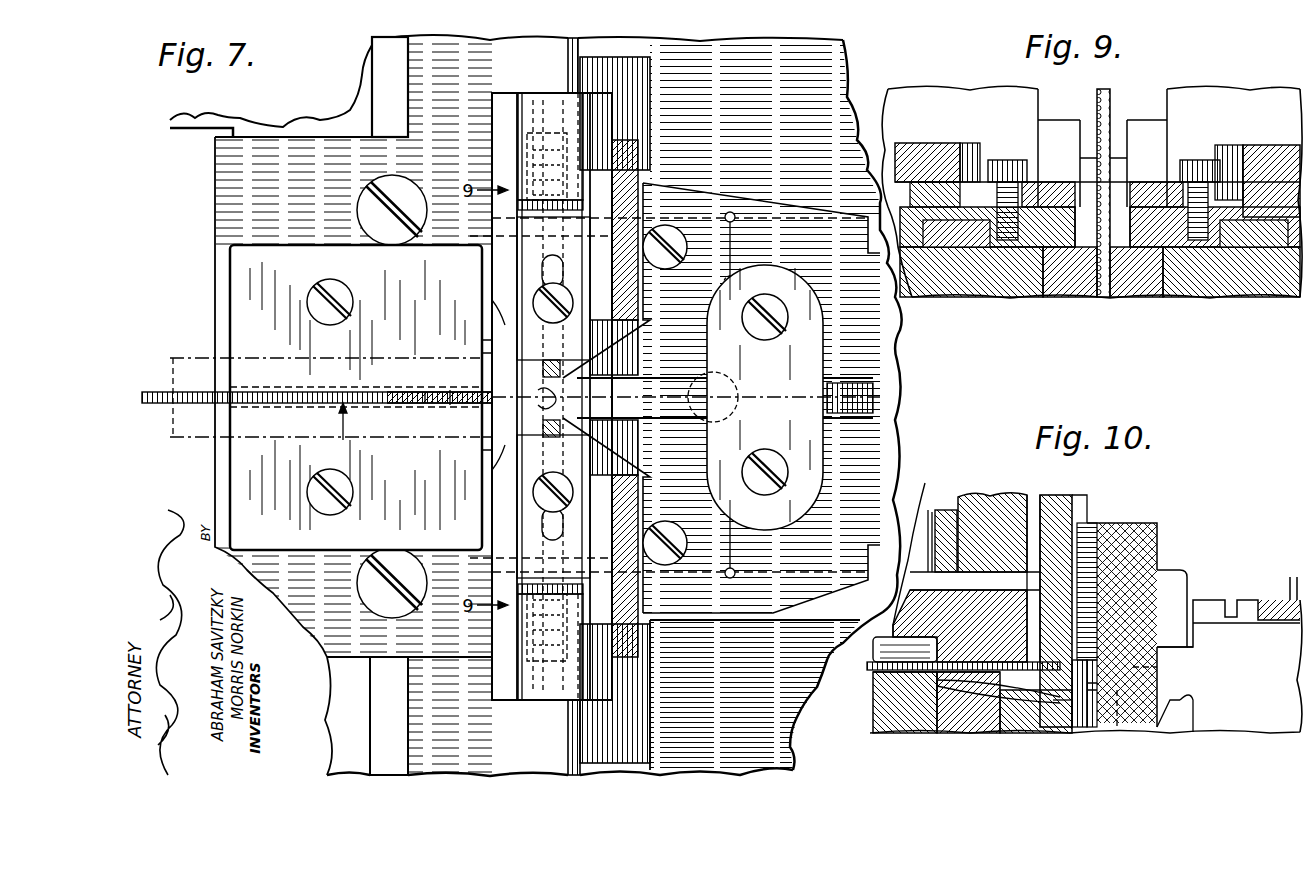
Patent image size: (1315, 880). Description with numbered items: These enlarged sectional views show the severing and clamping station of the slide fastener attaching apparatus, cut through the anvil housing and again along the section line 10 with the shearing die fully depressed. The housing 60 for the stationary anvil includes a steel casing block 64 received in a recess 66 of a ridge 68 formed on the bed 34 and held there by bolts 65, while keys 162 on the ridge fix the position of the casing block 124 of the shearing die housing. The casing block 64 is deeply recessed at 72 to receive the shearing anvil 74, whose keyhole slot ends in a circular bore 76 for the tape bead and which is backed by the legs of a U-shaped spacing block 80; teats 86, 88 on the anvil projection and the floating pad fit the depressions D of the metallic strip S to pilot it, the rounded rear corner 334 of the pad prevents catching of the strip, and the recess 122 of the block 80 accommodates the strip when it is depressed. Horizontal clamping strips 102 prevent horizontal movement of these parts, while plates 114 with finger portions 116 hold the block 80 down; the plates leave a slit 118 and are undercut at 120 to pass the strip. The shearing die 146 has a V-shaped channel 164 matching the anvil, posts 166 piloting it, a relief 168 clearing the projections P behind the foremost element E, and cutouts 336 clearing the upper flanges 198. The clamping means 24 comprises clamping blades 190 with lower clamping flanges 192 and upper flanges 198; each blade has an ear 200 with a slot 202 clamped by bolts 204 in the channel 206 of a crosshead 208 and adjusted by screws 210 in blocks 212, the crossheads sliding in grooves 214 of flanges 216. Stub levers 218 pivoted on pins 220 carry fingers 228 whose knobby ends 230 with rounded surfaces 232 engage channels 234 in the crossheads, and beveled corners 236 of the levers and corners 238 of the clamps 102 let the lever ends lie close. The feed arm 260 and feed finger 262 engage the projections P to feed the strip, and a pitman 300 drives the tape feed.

In FIG. 7, the bed 34 is at (830, 60).
In FIG. 7, the anvil housing 60 is at (207, 212).
In FIG. 7, the casing block 64 is at (463, 640).
In FIG. 9, the casing block 64 is at (1207, 277).
In FIG. 10, the casing block 64 is at (875, 733).
In FIG. 7, the bolts 65 is at (362, 208).
In FIG. 7, the recess 66 is at (455, 143).
In FIG. 7, the ridge 68 is at (545, 767).
In FIG. 9, the forward recess 72 is at (1147, 280).
In FIG. 10, the forward recess 72 is at (897, 733).
In FIG. 7, the shearing anvil 74 is at (567, 390).
In FIG. 9, the shearing anvil 74 is at (1113, 300).
In FIG. 10, the shearing anvil 74 is at (1073, 733).
In FIG. 10, the bore 76 is at (1098, 733).
In FIG. 7, the U-shaped spacing block 80 is at (500, 327).
In FIG. 10, the U-shaped spacing block 80 is at (945, 718).
In FIG. 10, the teat 86 is at (1087, 683).
In FIG. 10, the teat 88 is at (1053, 733).
In FIG. 7, the clamping strips 102 is at (625, 748).
In FIG. 10, the clamping strips 102 is at (1115, 710).
In FIG. 7, the clamping plates 114 is at (297, 540).
In FIG. 7, the finger portions 116 is at (483, 363).
In FIG. 7, the slit 118 is at (258, 392).
In FIG. 7, the undercut 120 is at (407, 387).
In FIG. 10, the recess 122 is at (935, 700).
In FIG. 9, the casing block 124 is at (925, 107).
In FIG. 7, the shearing die 146 is at (480, 423).
In FIG. 10, the shearing die 146 is at (1040, 505).
In FIG. 7, the keys 162 is at (393, 757).
In FIG. 7, the V-shaped channel 164 is at (490, 383).
In FIG. 10, the V-shaped channel 164 is at (1078, 497).
In FIG. 10, the posts 166 is at (1028, 733).
In FIG. 10, the relief 168 is at (957, 733).
In FIG. 9, the clamping blades 190 is at (1050, 227).
In FIG. 9, the lower clamping flange 192 is at (1060, 297).
In FIG. 10, the lower clamping flange 192 is at (1133, 667).
In FIG. 9, the upper flanges 198 is at (1138, 220).
In FIG. 10, the upper flanges 198 is at (1193, 653).
In FIG. 9, the ear 200 is at (983, 153).
In FIG. 7, the elongated slot 202 is at (613, 290).
In FIG. 9, the elongated slot 202 is at (1227, 187).
In FIG. 7, the bolts 204 is at (507, 263).
In FIG. 9, the bolts 204 is at (1192, 167).
In FIG. 7, the channels 206 is at (510, 550).
In FIG. 7, the crossheads 208 is at (603, 685).
In FIG. 7, the adjusting screws 210 is at (538, 98).
In FIG. 9, the adjusting screws 210 is at (1245, 217).
In FIG. 7, the blocks 212 is at (533, 687).
In FIG. 9, the blocks 212 is at (1265, 183).
In FIG. 7, the grooves 214 is at (608, 158).
In FIG. 9, the grooves 214 is at (938, 192).
In FIG. 10, the grooves 214 is at (1153, 610).
In FIG. 9, the flanges 216 is at (890, 163).
In FIG. 10, the flanges 216 is at (1168, 583).
In FIG. 7, the stub levers 218 is at (721, 401).
In FIG. 7, the pins 220 is at (780, 317).
In FIG. 7, the fingers 228 is at (727, 580).
In FIG. 9, the knobby ends 230 is at (1243, 243).
In FIG. 7, the lateral surfaces 232 is at (524, 540).
In FIG. 7, the channels 234 is at (522, 229).
In FIG. 9, the channels 234 is at (943, 257).
In FIG. 10, the lower corners 236 is at (1190, 730).
In FIG. 10, the upper corners 238 is at (1180, 700).
In FIG. 10, the feed arm 260 is at (908, 593).
In FIG. 7, the feed finger 262 is at (413, 403).
In FIG. 10, the feed finger 262 is at (1023, 653).
In FIG. 7, the pitman 300 is at (653, 203).
In FIG. 10, the rear corner 334 is at (997, 733).
In FIG. 7, the cutouts 336 is at (607, 407).
In FIG. 7, the section line 10 is at (548, 433).
In FIG. 7, the clamping means 24 is at (495, 445).
In FIG. 7, the metallic strip S is at (157, 387).
In FIG. 10, the metallic strip S is at (860, 667).
In FIG. 10, the projections P is at (887, 638).
In FIG. 10, the slide fastener element E is at (1060, 697).
In FIG. 10, the depressions D is at (1062, 695).